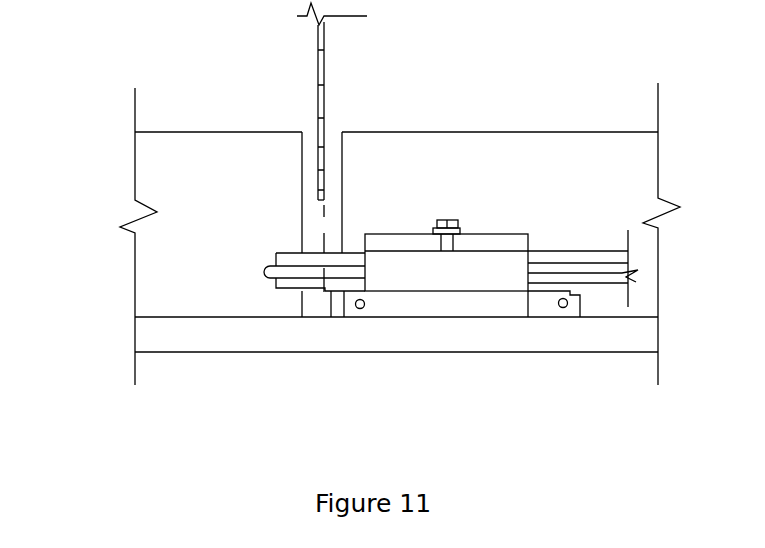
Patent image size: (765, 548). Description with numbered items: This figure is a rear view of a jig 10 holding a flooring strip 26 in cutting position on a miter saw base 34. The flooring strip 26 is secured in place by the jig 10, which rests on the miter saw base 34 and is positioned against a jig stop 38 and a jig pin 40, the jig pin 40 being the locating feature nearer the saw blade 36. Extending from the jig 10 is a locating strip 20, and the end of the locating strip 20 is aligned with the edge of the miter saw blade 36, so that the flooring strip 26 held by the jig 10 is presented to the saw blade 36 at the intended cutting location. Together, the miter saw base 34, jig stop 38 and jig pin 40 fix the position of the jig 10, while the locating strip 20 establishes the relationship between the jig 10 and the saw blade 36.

The jig 10 is at (433, 277).
The locating strip 20 is at (329, 292).
The flooring strip 26 is at (303, 267).
The miter saw base 34 is at (57, 388).
The saw blade 36 is at (324, 78).
The jig stop 38 is at (537, 303).
The jig pin 40 is at (362, 308).